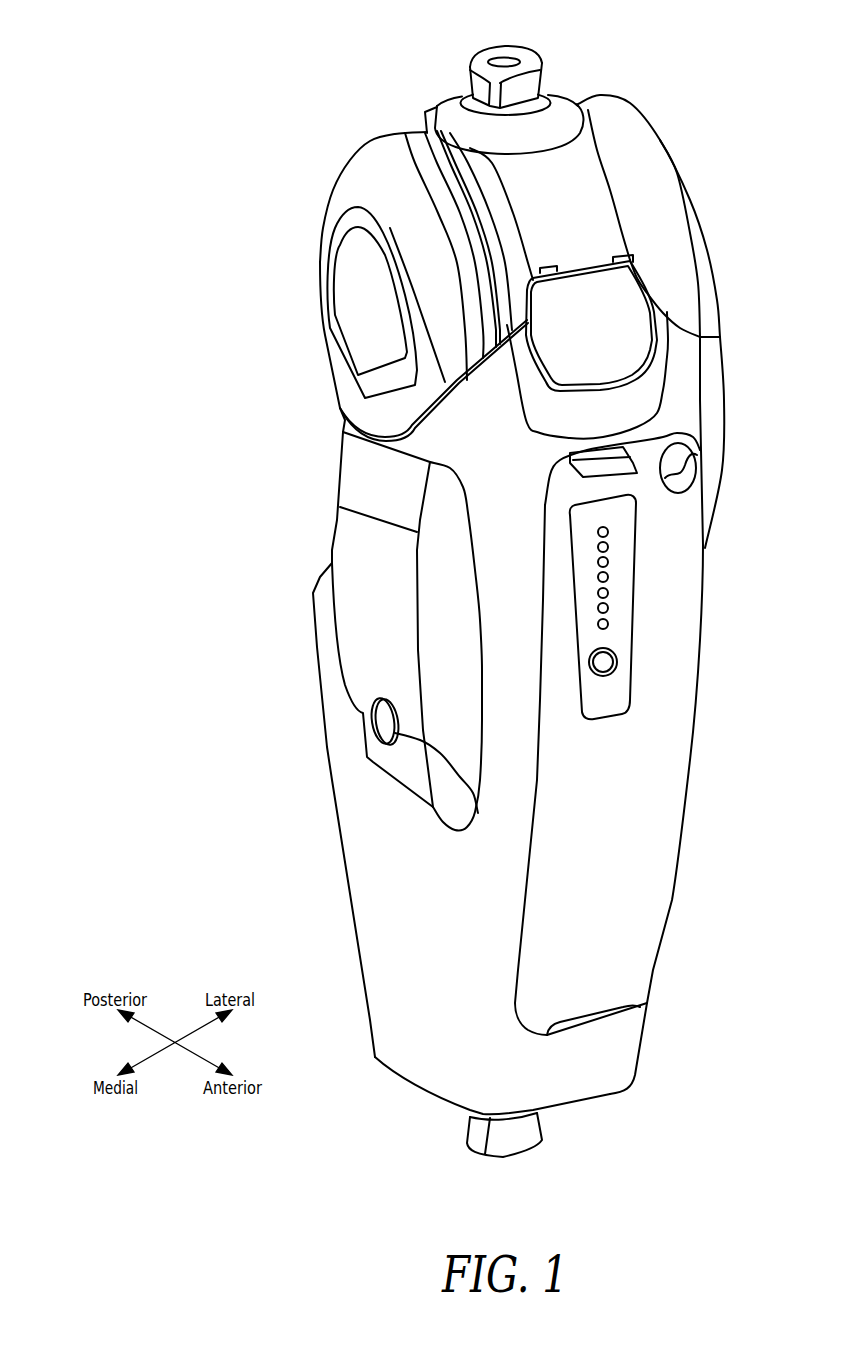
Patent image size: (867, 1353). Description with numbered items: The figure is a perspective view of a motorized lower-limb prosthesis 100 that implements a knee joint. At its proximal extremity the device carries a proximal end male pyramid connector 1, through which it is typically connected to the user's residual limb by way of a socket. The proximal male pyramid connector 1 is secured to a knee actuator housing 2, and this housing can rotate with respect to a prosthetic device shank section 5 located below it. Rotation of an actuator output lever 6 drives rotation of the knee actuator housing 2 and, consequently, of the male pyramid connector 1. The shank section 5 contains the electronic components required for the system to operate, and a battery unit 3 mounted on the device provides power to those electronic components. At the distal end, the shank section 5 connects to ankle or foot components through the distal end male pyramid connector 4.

The motorized lower-limb prosthesis 100 is at (176, 217).
The proximal end male pyramid connector 1 is at (531, 60).
The knee actuator housing 2 is at (637, 157).
The battery unit 3 is at (663, 700).
The distal end male pyramid connector 4 is at (536, 1128).
The prosthetic device shank section 5 is at (377, 860).
The actuator output lever 6 is at (332, 213).